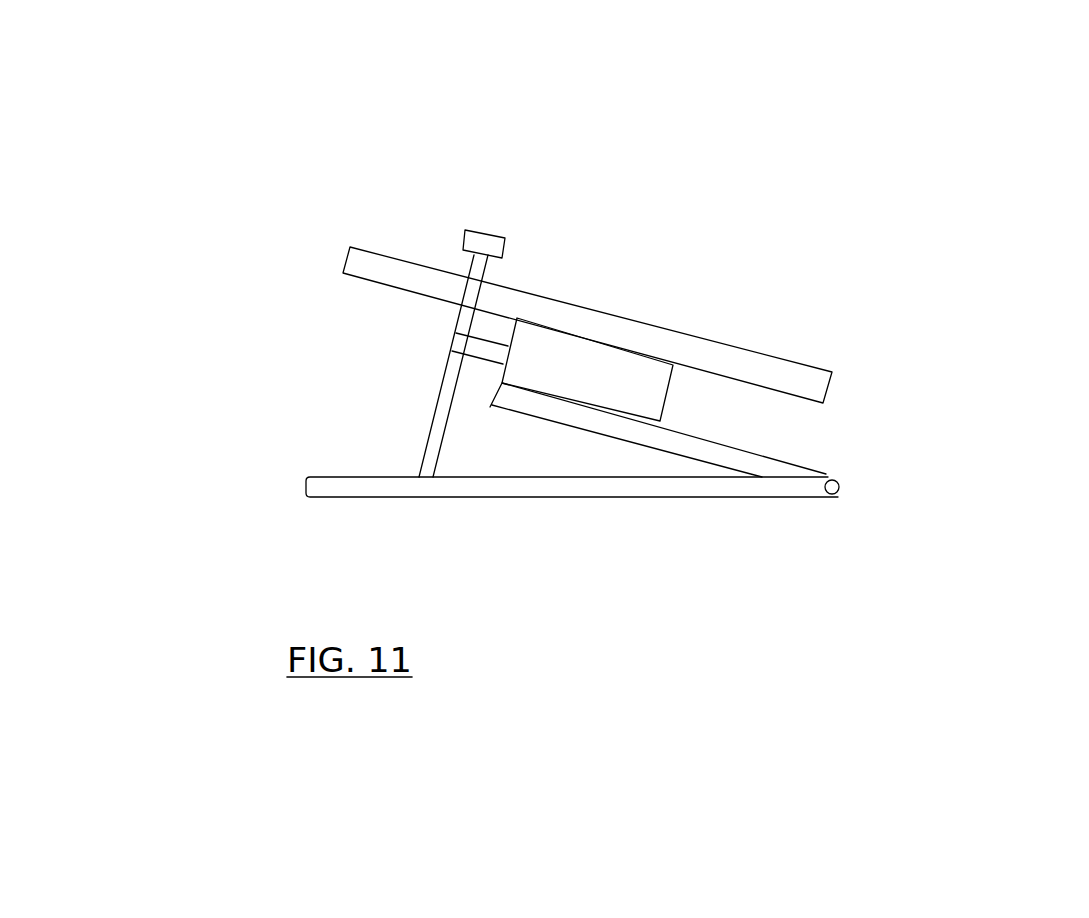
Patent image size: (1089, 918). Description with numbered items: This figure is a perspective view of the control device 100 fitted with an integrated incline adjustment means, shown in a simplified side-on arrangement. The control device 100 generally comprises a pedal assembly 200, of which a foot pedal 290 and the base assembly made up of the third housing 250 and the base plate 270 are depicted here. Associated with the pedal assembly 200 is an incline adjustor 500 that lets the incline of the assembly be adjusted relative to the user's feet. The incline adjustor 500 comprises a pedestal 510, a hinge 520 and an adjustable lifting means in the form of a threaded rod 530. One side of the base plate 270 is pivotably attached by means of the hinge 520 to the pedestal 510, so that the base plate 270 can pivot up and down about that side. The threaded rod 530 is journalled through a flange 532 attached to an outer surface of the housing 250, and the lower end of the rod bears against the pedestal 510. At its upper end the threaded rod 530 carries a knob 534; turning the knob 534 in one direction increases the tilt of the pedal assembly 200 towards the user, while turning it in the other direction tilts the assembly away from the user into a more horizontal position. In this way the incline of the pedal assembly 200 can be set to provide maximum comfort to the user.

The control device 100 is at (909, 128).
The pedal assembly 200 is at (968, 333).
The third housing 250 is at (593, 368).
The base plate 270 is at (700, 447).
The foot pedal 290 is at (542, 305).
The incline adjustor 500 is at (570, 561).
The pedestal 510 is at (328, 487).
The hinge 520 is at (840, 485).
The threaded rod 530 is at (447, 385).
The flange 532 is at (455, 340).
The knob 534 is at (492, 240).